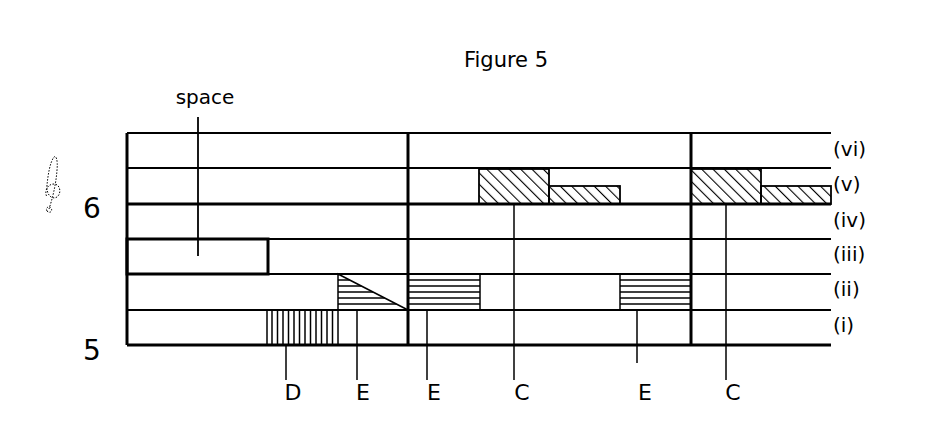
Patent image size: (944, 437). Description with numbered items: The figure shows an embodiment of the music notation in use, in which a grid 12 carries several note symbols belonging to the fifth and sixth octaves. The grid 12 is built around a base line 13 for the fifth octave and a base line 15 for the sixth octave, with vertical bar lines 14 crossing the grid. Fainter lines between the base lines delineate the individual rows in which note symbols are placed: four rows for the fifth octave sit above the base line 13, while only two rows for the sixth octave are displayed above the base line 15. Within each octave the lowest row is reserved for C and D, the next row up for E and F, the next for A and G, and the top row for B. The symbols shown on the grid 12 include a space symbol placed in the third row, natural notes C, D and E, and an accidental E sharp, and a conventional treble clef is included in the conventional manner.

The grid 12 is at (285, 108).
The base line for the fifth octave 13 is at (202, 345).
The vertical bar lines 14 is at (125, 152).
The base line for the sixth octave 15 is at (143, 207).